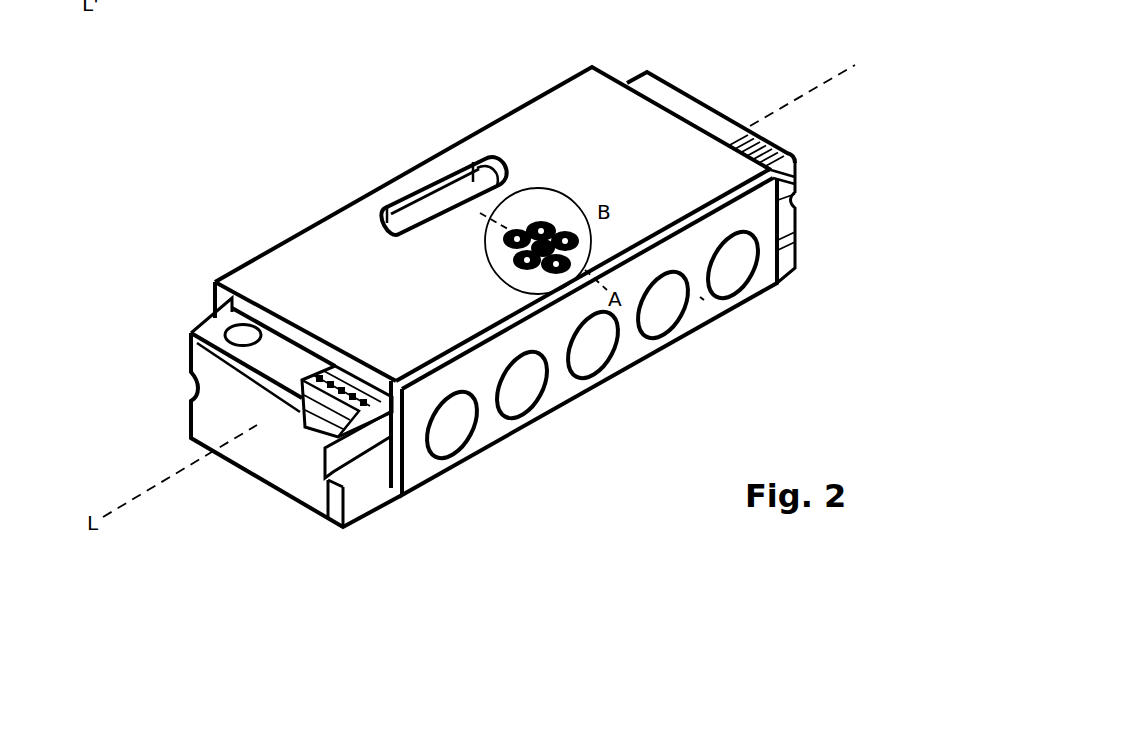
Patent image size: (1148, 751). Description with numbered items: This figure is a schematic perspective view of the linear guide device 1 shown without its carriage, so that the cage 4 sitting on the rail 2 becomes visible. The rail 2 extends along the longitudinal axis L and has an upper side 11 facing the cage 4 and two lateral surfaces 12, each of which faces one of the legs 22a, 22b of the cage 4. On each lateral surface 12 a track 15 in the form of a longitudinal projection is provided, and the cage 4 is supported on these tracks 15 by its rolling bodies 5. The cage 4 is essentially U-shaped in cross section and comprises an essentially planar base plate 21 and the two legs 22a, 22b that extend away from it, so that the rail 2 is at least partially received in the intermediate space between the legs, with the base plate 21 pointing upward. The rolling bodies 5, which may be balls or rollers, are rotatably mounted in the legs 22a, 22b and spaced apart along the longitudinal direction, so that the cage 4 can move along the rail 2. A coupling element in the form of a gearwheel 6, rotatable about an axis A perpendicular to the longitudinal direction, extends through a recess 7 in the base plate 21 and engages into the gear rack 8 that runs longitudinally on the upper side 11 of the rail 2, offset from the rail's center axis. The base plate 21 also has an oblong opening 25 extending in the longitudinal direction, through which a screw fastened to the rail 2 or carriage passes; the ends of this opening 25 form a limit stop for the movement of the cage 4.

The linear guide device 1 is at (466, 130).
The rail 2 is at (288, 0).
The cage 4 is at (594, 112).
The rolling bodies 5 is at (512, 392).
The gearwheel 6 is at (556, 222).
The recess 7 is at (606, 262).
The gear rack 8 is at (303, 428).
The upper side 11 is at (273, 357).
The lateral surfaces 12 is at (192, 417).
The track 15 is at (198, 387).
The base plate 21 is at (367, 240).
The leg 22a is at (702, 297).
The leg 22b is at (217, 312).
The opening 25 is at (438, 210).